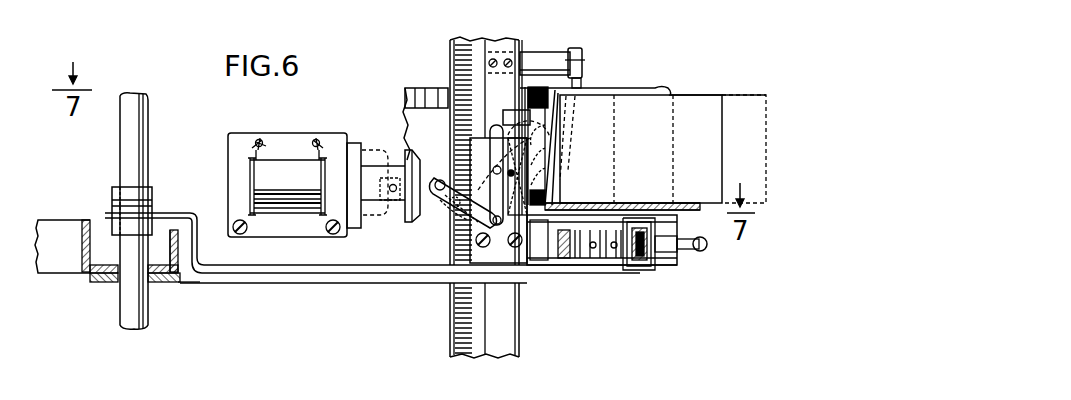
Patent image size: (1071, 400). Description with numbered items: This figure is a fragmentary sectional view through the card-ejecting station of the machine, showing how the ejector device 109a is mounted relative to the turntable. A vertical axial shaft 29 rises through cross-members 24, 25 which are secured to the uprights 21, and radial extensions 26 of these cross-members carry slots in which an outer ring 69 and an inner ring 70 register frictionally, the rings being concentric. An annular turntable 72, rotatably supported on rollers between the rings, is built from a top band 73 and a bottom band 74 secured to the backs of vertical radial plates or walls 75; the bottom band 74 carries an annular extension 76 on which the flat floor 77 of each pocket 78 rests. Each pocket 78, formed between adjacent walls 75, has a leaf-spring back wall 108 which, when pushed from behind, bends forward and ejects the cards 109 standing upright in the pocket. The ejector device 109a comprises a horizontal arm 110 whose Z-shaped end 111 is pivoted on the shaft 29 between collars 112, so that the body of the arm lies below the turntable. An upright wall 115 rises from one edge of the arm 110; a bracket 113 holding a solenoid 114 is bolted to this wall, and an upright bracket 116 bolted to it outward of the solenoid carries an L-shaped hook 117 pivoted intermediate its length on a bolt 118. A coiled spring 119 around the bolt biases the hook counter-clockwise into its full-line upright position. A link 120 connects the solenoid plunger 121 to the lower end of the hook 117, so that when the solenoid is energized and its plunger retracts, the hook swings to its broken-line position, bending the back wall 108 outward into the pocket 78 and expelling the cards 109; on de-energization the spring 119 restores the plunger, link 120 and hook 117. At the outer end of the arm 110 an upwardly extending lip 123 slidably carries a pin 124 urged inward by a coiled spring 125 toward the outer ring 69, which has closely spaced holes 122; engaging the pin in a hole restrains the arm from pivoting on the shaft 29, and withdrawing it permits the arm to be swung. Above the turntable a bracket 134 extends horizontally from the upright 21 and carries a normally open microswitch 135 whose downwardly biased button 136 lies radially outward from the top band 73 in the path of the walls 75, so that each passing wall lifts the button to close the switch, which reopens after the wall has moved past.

The upright 21 is at (470, 45).
The cross-member 24 is at (62, 272).
The cross-member 25 is at (188, 276).
The radial extension 26 is at (526, 285).
The vertical axial shaft 29 is at (120, 138).
The outer ring 69 is at (632, 256).
The ring 70 is at (570, 265).
The annular turntable 72 is at (410, 84).
The top circular band 73 is at (425, 97).
The bottom band 74 is at (536, 190).
The vertical plate or wall 75 is at (632, 88).
The annular extension 76 is at (548, 228).
The floor 77 is at (592, 205).
The pocket 78 is at (658, 88).
The back wall 108 is at (565, 112).
The cards 109 is at (736, 100).
The ejector device 109a is at (250, 130).
The horizontal arm 110 is at (360, 270).
The Z-shaped end 111 is at (176, 213).
The collars 112 is at (110, 210).
The bracket 113 is at (294, 171).
The solenoid 114 is at (282, 204).
The upright wall 115 is at (220, 265).
The upright bracket 116 is at (476, 237).
The L-shaped member or hook 117 is at (497, 128).
The bolt 118 is at (495, 168).
The coiled spring 119 is at (512, 178).
The link 120 is at (478, 220).
The solenoid plunger 121 is at (384, 152).
The holes 122 is at (614, 252).
The lip 123 is at (658, 260).
The pin 124 is at (698, 250).
The coiled spring 125 is at (642, 262).
The bracket 134 is at (540, 58).
The microswitch 135 is at (578, 52).
The actuating button 136 is at (582, 82).